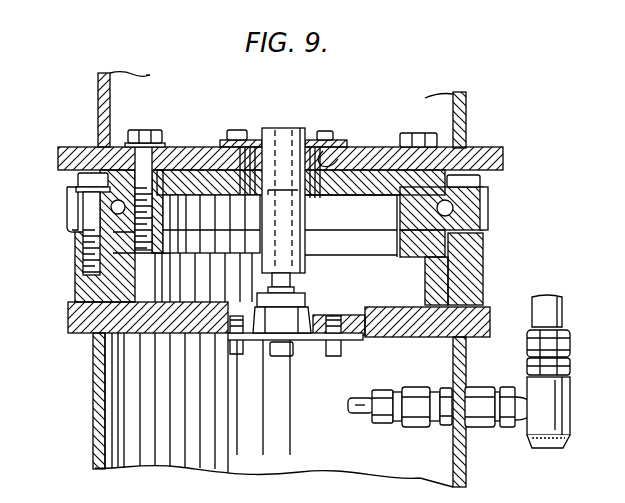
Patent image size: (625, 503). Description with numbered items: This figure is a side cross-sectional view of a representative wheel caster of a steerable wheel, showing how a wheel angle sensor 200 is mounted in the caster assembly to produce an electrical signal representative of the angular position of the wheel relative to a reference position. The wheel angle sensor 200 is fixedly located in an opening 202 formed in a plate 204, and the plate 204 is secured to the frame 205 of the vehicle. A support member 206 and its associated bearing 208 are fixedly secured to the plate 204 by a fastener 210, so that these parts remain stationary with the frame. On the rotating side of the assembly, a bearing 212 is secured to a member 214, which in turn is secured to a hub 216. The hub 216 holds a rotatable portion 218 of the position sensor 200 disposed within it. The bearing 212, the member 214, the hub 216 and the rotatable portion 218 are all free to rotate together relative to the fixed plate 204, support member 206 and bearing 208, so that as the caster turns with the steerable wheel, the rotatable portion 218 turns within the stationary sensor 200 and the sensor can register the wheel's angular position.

The wheel angle sensor 200 is at (268, 128).
The opening 202 is at (340, 148).
The plate 204 is at (503, 158).
The frame 205 is at (465, 113).
The support member 206 is at (450, 174).
The bearing 208 is at (427, 222).
The fastener 210 is at (146, 131).
The bearing 212 is at (78, 216).
The member 214 is at (480, 274).
The hub 216 is at (62, 318).
The rotatable portion 218 is at (299, 353).